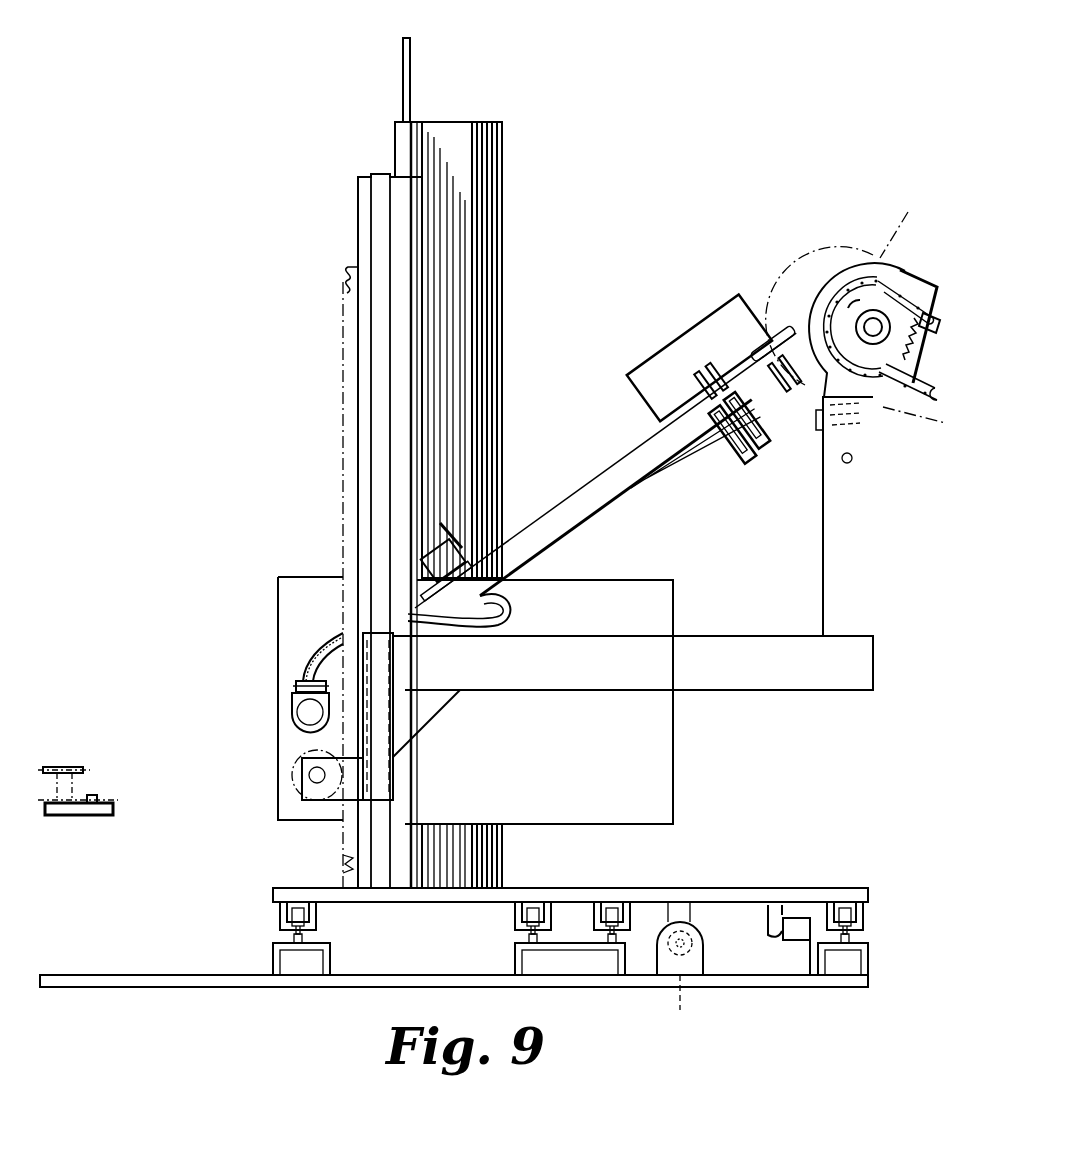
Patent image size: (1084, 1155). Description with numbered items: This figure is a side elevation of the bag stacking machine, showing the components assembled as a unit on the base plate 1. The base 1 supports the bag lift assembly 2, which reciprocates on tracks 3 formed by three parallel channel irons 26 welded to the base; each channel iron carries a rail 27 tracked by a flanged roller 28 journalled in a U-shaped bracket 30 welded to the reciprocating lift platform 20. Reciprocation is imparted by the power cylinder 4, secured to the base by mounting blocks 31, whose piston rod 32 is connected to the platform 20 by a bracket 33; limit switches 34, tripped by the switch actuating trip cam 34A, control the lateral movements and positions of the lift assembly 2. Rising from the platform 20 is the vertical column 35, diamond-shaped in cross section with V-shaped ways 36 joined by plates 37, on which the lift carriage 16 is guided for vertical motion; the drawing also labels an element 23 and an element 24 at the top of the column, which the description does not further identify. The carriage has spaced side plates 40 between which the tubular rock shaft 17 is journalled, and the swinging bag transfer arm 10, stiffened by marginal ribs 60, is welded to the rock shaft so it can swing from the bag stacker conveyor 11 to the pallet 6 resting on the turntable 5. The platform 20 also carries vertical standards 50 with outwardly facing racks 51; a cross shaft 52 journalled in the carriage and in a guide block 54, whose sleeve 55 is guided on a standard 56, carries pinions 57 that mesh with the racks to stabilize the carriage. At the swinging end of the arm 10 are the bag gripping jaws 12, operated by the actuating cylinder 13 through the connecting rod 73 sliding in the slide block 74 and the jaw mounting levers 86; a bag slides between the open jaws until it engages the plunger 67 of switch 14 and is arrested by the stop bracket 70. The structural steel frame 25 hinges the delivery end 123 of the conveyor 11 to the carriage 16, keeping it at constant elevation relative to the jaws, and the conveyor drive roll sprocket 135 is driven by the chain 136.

The base plate 1 is at (207, 972).
The bag lift assembly 2 is at (540, 272).
The tracks 3 is at (885, 965).
The power cylinder 4 is at (684, 1004).
The rotary turntable 5 is at (70, 815).
The pallet 6 is at (78, 765).
The swinging bag transfer arm 10 is at (578, 497).
The bag stacker conveyor 11 is at (855, 313).
The bag gripping jaws 12 is at (720, 312).
The actuating cylinder 13 is at (648, 338).
The switch 14 is at (455, 572).
The lift carriage 16 is at (655, 763).
The rock shaft 17 is at (290, 716).
The lift platform 20 is at (705, 888).
The rod tip 23 is at (403, 72).
The guide rod 24 is at (410, 52).
The structural steel frame 25 is at (875, 540).
The channel irons 26 is at (332, 962).
The rail 27 is at (570, 959).
The flanged roller 28 is at (318, 918).
The U-shaped brackets 30 is at (280, 910).
The mounting blocks 31 is at (705, 962).
The piston rod 32 is at (708, 938).
The bracket 33 is at (690, 912).
The limit switches 34 is at (795, 940).
The switch actuating trip cam 34A is at (778, 905).
The vertical column 35 is at (460, 118).
The V-shaped ways 36 is at (395, 141).
The plates 37 is at (455, 228).
The side plates 40 is at (552, 737).
The vertical standards 50 is at (358, 224).
The rack 51 is at (338, 312).
The cross shaft 52 is at (316, 784).
The guide block 54 is at (303, 790).
The sleeve 55 is at (382, 684).
The standard 56 is at (380, 410).
The pinions 57 is at (295, 752).
The marginal ribs 60 is at (560, 538).
The plunger 67 is at (465, 540).
The stop bracket 70 is at (478, 567).
The connecting rod 73 is at (690, 462).
The slide block 74 is at (776, 358).
The jaw mounting levers 86 is at (714, 376).
The delivery end 123 is at (830, 262).
The sprocket 135 is at (846, 308).
The chain 136 is at (900, 280).